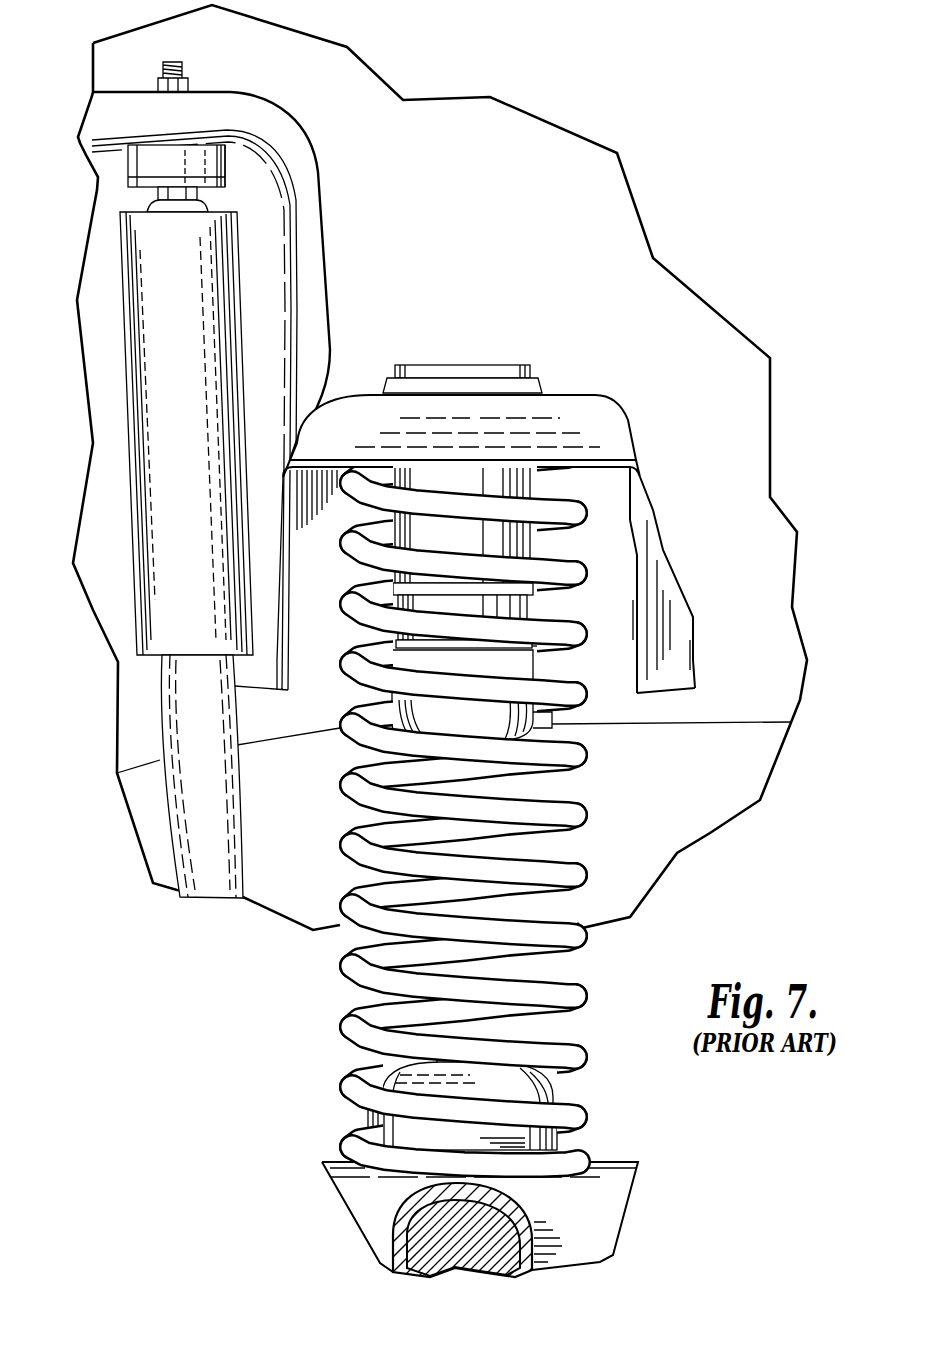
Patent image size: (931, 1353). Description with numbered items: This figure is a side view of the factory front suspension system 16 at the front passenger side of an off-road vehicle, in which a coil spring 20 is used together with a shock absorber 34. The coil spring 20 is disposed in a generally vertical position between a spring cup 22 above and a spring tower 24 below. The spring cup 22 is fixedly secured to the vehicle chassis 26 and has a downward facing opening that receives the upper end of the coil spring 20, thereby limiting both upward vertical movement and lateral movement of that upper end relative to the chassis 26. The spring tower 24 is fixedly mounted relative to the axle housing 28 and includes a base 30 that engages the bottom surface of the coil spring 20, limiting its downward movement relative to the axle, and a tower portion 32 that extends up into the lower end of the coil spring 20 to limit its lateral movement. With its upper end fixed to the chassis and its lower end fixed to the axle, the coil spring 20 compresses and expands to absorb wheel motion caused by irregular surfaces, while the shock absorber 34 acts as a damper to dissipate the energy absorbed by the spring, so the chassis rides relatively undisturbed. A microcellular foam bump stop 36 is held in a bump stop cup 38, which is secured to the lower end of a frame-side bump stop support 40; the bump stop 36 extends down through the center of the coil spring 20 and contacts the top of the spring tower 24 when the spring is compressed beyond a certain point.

The front suspension system 16 is at (133, 878).
The coil spring 20 is at (580, 983).
The spring cup 22 is at (617, 405).
The spring tower 24 is at (370, 1115).
The vehicle chassis 26 is at (617, 219).
The axle housing 28 is at (400, 1222).
The base 30 is at (610, 1158).
The tower portion 32 is at (550, 1083).
The shock absorber 34 is at (130, 418).
The bump stop 36 is at (557, 733).
The bump stop cup 38 is at (547, 607).
The bump stop support 40 is at (547, 547).